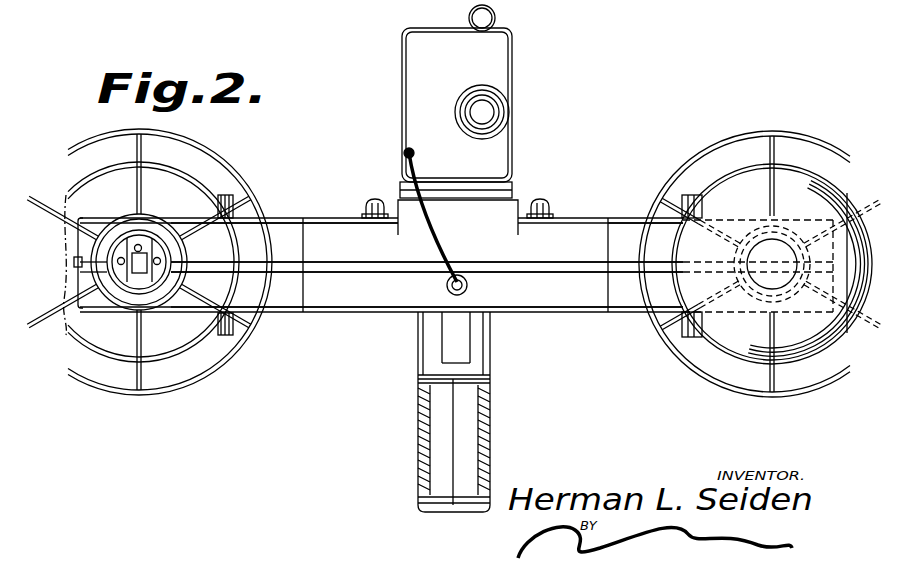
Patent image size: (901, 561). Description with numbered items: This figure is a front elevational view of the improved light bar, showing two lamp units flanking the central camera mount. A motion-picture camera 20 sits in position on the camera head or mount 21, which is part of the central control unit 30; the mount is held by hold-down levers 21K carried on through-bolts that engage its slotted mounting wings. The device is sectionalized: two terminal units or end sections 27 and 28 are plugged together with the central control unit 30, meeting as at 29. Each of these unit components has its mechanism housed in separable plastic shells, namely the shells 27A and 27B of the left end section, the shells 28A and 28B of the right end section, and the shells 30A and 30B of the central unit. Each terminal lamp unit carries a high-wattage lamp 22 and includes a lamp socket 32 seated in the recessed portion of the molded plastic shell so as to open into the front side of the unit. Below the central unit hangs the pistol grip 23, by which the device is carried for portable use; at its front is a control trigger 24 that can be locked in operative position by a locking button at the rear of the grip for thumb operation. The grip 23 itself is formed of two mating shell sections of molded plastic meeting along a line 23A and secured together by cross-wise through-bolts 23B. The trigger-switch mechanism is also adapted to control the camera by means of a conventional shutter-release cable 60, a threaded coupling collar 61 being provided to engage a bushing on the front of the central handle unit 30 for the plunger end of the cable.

The motion-picture camera 20 is at (488, 68).
The camera head or mount 21 is at (521, 199).
The hold-down lever 21K is at (378, 198).
The high-wattage lamp 22 is at (188, 166).
The pistol grip 23 is at (491, 443).
The meeting line 23A is at (420, 380).
The cross-wise through-bolt 23B is at (480, 386).
The control trigger 24 is at (455, 345).
The terminal unit or end section 27 is at (279, 217).
The separable plastic shell 27A is at (287, 238).
The separable plastic shell 27B is at (285, 292).
The terminal unit or end section 28 is at (638, 216).
The separable plastic shell 28A is at (622, 240).
The separable plastic shell 28B is at (628, 300).
The meeting point 29 is at (305, 217).
The central control unit 30 is at (497, 243).
The separable plastic shell 30A is at (385, 255).
The separable plastic shell 30B is at (383, 298).
The lamp socket 32 is at (143, 278).
The shutter-release cable 60 is at (424, 182).
The threaded coupling collar 61 is at (468, 285).